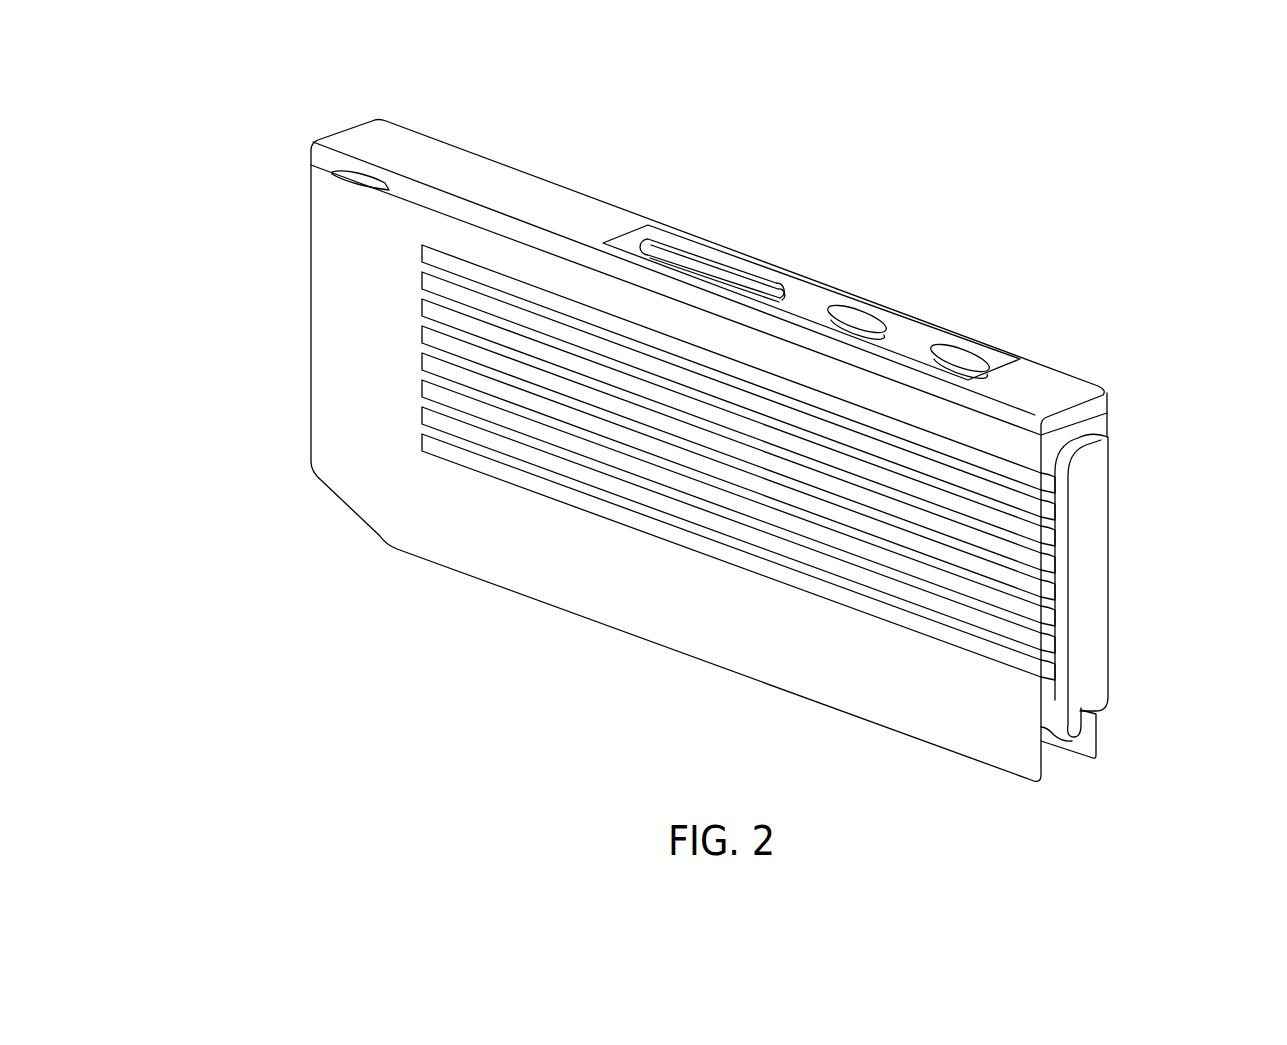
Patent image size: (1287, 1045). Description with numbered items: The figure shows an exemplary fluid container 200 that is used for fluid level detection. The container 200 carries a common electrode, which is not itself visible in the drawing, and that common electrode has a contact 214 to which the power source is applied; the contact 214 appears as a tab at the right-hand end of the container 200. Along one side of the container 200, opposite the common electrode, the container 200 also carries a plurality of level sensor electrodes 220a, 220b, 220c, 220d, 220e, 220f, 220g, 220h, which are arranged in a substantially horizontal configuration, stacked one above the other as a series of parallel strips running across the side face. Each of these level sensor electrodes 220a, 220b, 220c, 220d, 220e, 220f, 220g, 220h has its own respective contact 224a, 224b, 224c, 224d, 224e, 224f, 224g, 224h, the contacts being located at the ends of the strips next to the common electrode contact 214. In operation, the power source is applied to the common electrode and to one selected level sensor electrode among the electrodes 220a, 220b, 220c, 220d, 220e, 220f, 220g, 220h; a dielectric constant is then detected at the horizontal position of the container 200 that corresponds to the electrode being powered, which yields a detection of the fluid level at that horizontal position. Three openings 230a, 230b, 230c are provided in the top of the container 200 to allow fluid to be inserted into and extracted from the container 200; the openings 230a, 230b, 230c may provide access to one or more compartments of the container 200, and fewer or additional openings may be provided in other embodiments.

The fluid container 200 is at (318, 97).
The contact 214 is at (1090, 683).
The level sensor electrode 220a is at (432, 254).
The level sensor electrode 220b is at (432, 281).
The level sensor electrode 220c is at (432, 308).
The level sensor electrode 220d is at (432, 335).
The level sensor electrode 220e is at (432, 362).
The level sensor electrode 220f is at (432, 389).
The level sensor electrode 220g is at (432, 416).
The level sensor electrode 220h is at (432, 443).
The contact 224a is at (1050, 481).
The contact 224b is at (1050, 508).
The contact 224c is at (1050, 534).
The contact 224d is at (1050, 561).
The contact 224e is at (1050, 588).
The contact 224f is at (1050, 614).
The contact 224g is at (1050, 641).
The contact 224h is at (1050, 668).
The opening 230a is at (961, 357).
The opening 230b is at (856, 318).
The opening 230c is at (706, 262).